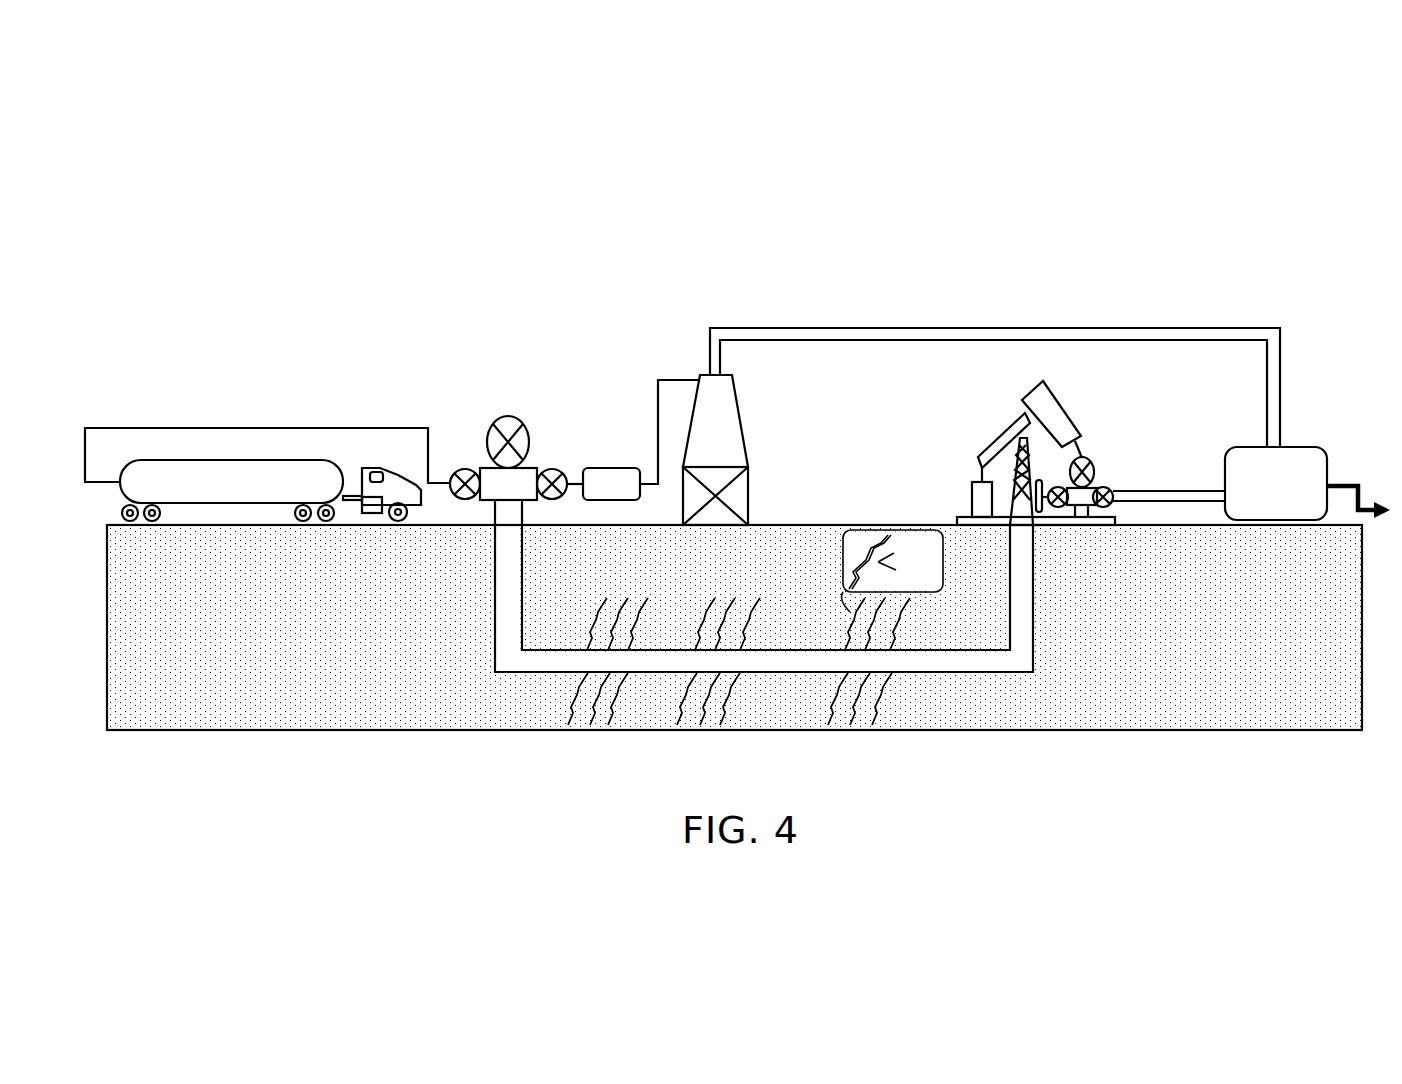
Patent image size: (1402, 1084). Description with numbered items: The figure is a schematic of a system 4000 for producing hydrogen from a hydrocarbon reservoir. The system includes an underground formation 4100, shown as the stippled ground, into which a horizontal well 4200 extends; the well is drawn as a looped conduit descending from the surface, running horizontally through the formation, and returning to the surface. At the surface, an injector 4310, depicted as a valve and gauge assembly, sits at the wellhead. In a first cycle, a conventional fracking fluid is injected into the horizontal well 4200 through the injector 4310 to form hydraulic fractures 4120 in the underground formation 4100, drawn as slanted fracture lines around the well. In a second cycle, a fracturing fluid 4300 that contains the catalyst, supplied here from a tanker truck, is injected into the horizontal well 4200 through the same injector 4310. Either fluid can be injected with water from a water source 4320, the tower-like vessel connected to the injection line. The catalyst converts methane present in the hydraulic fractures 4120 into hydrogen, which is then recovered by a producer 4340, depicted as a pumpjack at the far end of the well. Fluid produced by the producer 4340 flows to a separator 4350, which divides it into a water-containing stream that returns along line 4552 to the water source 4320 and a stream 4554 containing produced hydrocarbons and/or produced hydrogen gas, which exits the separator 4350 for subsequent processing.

The system 4000 is at (1148, 220).
The underground formation 4100 is at (107, 598).
The hydraulic fractures 4120 is at (728, 707).
The horizontal well 4200 is at (952, 678).
The fracturing fluid 4300 is at (226, 460).
The injector 4310 is at (507, 416).
The water source 4320 is at (736, 400).
The producer 4340 is at (1002, 438).
The separator 4350 is at (1276, 483).
The recycle line 4552 is at (932, 328).
The stream 4554 is at (1369, 502).